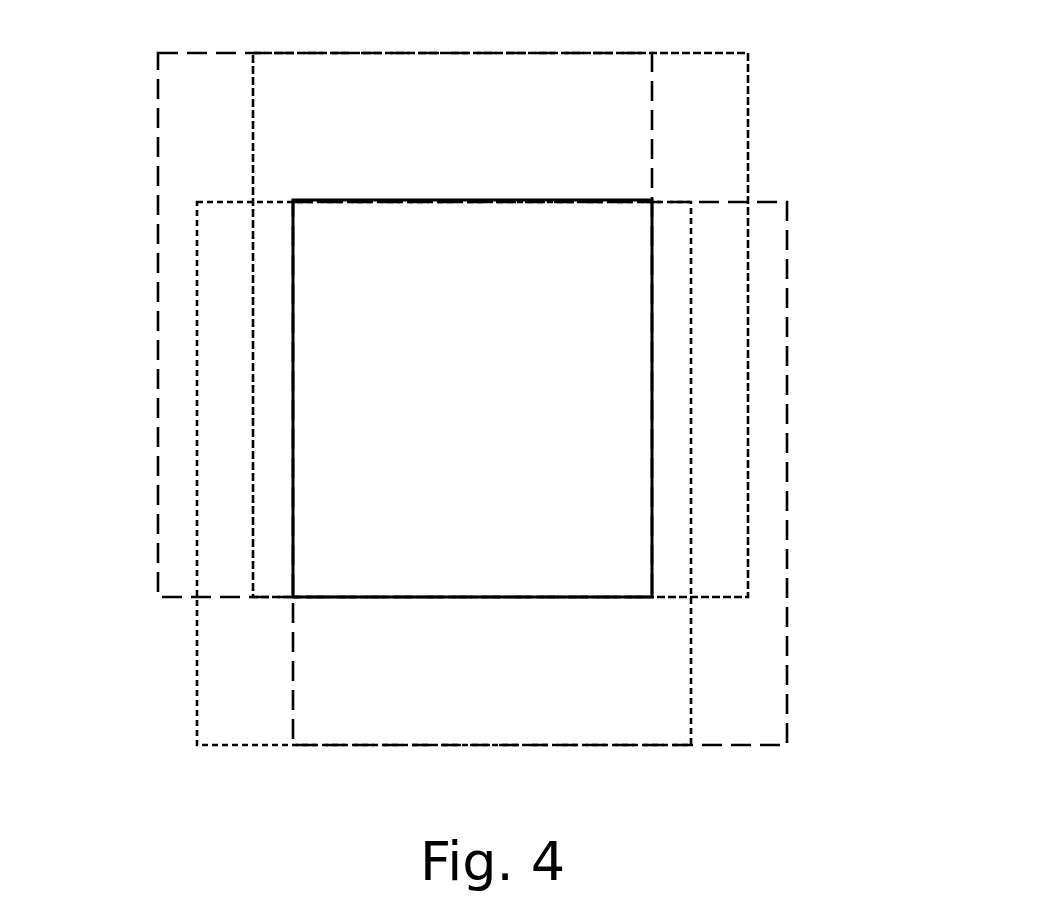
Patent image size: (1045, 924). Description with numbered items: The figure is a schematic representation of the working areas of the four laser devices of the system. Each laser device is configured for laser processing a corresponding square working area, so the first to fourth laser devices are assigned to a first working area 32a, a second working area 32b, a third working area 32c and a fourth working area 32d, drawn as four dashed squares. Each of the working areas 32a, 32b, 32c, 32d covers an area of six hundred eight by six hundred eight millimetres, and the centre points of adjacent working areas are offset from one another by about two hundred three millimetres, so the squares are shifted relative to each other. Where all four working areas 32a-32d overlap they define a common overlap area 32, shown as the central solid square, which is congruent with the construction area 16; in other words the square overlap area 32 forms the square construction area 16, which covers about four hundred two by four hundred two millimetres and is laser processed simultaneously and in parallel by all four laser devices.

The construction area 16 is at (500, 598).
The common overlap area 32 is at (452, 200).
The first working area 32a is at (158, 125).
The second working area 32b is at (748, 157).
The third working area 32c is at (197, 665).
The fourth working area 32d is at (788, 660).